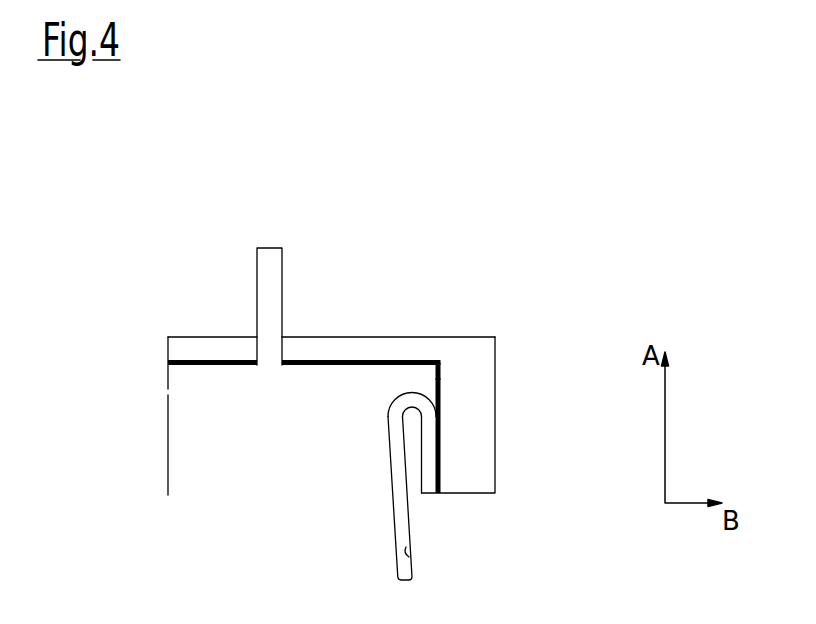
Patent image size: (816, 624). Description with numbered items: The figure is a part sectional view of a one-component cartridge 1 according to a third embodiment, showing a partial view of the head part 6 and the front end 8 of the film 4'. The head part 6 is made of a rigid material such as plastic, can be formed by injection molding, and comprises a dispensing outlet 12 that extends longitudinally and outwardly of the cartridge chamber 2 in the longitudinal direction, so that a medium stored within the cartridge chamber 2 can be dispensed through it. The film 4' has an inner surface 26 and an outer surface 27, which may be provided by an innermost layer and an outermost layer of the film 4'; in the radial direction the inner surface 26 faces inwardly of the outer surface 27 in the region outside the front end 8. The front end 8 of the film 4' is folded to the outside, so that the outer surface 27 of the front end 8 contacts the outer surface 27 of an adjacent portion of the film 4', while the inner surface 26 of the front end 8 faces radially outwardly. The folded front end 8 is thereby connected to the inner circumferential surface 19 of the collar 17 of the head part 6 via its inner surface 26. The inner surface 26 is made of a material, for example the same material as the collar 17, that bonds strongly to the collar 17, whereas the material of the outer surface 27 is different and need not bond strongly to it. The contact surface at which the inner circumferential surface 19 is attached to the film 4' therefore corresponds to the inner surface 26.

The cartridge 1 is at (450, 210).
The cartridge chamber 2 is at (168, 455).
The film 4' is at (447, 502).
The head part 6 is at (363, 350).
The front end 8 is at (409, 420).
The dispensing outlet 12 is at (275, 263).
The collar 17 is at (485, 385).
The inner circumferential surface 19 is at (437, 378).
The inner surface 26 is at (441, 446).
The outer surface 27 is at (421, 467).